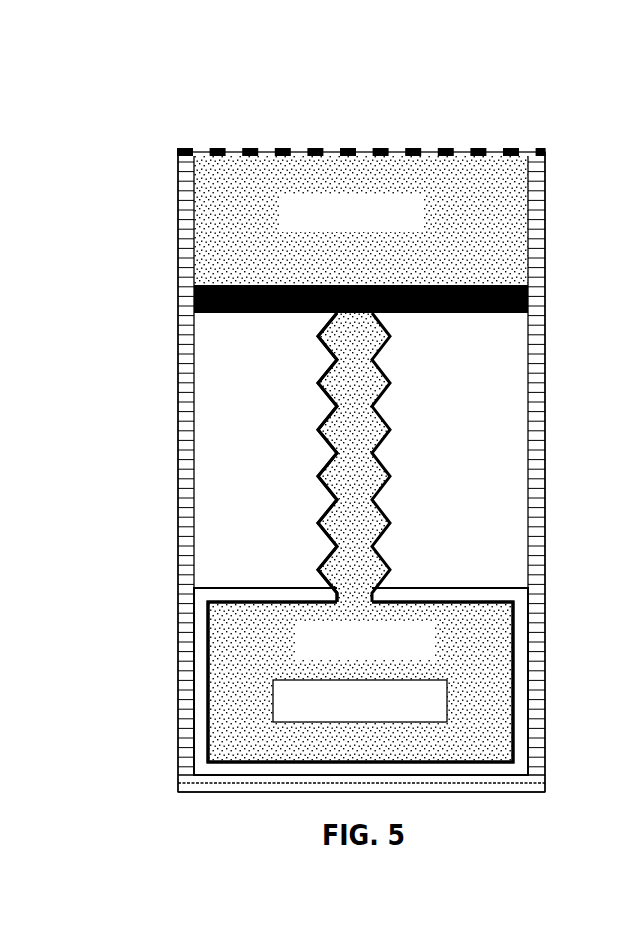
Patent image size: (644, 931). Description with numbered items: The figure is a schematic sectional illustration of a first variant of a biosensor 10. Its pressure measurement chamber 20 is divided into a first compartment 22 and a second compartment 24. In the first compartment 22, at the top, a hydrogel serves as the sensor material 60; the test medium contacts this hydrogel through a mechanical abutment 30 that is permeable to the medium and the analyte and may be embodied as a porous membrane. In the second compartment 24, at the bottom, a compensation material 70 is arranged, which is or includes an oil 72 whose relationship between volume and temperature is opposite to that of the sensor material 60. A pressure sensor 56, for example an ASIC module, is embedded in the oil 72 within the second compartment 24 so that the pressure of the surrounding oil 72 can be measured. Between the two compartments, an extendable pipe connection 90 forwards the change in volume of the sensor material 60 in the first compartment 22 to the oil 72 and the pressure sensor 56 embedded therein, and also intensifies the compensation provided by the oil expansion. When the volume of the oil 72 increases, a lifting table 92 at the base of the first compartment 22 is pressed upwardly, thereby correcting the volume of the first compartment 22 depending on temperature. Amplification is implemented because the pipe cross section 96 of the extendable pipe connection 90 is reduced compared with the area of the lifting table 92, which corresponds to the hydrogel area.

The biosensor 10 is at (160, 113).
The pressure measurement chamber 20 is at (178, 257).
The first compartment 22 is at (218, 210).
The second compartment 24 is at (233, 673).
The mechanical abutment 30 is at (313, 148).
The pressure sensor 56 is at (273, 716).
The sensor material 60 is at (351, 214).
The compensation material 70 is at (360, 682).
The oil 72 is at (360, 682).
The extendable pipe connection 90 is at (428, 393).
The lifting table 92 is at (194, 303).
The pipe cross section 96 is at (317, 431).